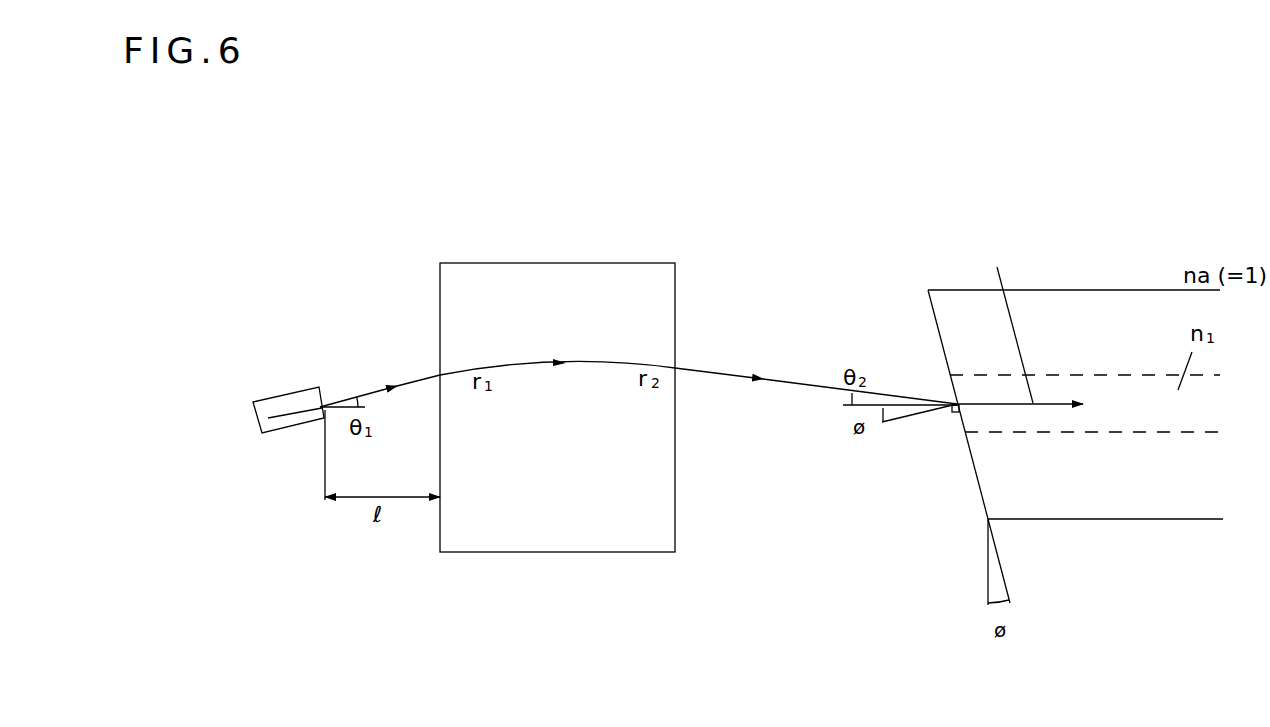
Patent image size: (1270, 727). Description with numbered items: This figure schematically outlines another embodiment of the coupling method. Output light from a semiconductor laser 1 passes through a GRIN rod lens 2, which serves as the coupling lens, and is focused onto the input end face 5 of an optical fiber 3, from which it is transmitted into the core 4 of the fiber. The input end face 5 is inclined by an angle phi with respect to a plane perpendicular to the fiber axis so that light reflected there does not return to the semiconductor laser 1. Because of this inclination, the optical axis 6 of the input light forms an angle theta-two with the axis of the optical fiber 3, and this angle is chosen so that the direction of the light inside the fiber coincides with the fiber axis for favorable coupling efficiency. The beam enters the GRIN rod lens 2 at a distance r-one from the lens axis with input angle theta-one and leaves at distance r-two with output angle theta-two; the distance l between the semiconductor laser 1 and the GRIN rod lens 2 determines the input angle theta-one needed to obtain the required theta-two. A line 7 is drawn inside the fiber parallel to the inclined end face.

The semiconductor laser 1 is at (285, 392).
The GRIN rod lens 2 is at (548, 515).
The optical fiber 3 is at (1102, 325).
The core 4 is at (1150, 420).
The input end face 5 is at (977, 473).
The optical axis 6 is at (780, 378).
The normal line 7 is at (1011, 315).